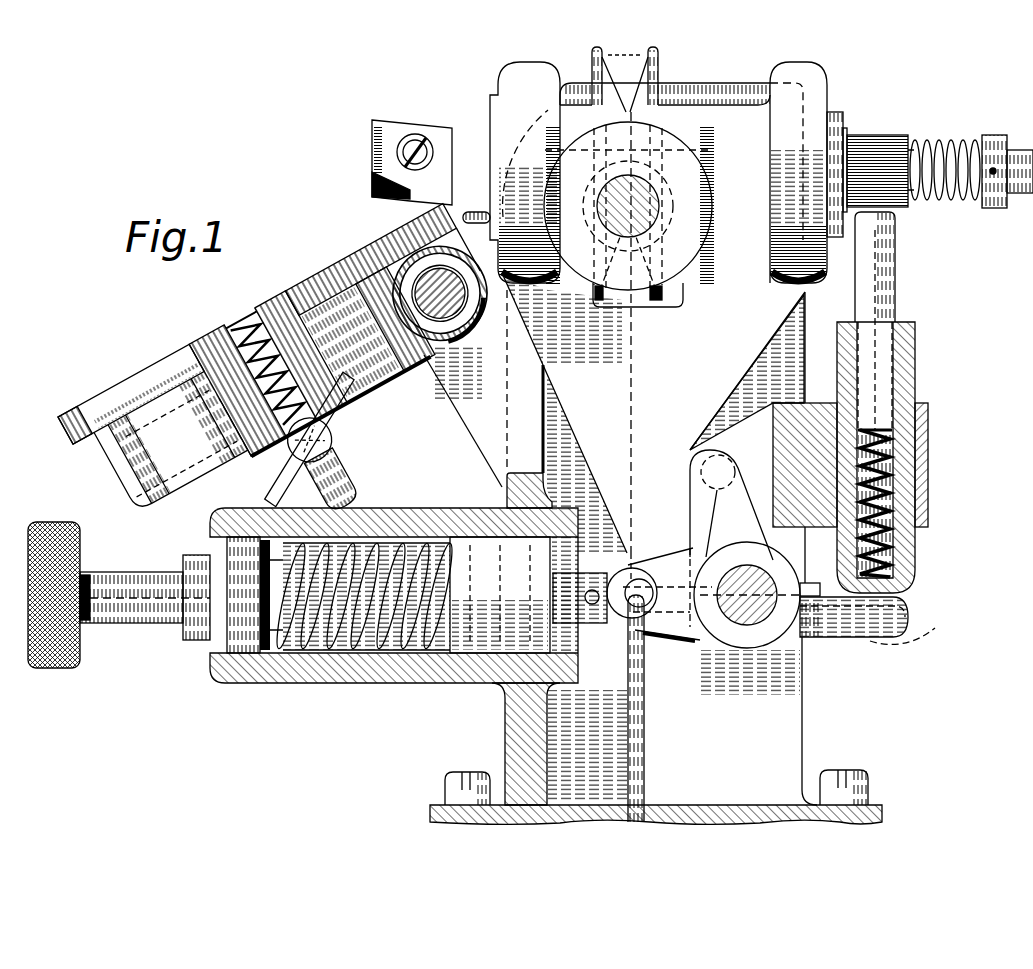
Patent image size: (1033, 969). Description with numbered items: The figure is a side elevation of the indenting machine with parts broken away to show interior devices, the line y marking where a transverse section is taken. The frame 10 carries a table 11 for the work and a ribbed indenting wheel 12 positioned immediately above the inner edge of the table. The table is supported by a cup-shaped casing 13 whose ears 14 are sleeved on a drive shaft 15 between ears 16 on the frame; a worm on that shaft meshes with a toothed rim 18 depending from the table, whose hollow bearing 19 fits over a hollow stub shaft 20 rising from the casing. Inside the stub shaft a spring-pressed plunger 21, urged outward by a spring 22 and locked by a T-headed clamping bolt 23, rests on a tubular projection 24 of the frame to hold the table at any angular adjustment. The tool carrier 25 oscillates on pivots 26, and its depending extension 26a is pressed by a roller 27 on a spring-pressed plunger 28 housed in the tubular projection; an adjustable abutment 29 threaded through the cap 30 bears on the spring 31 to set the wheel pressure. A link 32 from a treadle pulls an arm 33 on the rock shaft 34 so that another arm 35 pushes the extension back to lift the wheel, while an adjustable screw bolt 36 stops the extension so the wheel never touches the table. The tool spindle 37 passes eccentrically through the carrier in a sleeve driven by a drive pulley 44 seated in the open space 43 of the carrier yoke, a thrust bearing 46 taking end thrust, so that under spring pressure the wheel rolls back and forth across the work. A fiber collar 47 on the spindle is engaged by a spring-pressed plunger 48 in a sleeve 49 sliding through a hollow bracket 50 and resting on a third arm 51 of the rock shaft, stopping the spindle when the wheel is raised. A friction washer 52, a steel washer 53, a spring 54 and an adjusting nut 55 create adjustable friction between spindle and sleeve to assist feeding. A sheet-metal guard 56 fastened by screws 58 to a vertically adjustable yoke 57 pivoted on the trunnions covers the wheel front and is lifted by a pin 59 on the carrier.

The frame 10 is at (497, 742).
The table 11 is at (147, 375).
The indenting wheel 12 is at (378, 192).
The cup-shaped casing 13 is at (124, 488).
The ears 14 is at (462, 372).
The drive shaft 15 is at (470, 333).
The ears on the frame 16 is at (460, 413).
The toothed rim or disk 18 is at (320, 355).
The hollow bearing 19 is at (220, 406).
The stub shaft 20 is at (207, 334).
The spring-pressed plunger 21 is at (360, 479).
The spring 22 is at (243, 328).
The T-headed clamping bolt 23 is at (357, 434).
The tubular projection 24 is at (396, 516).
The tool carrier 25 is at (502, 76).
The pivots 26 is at (600, 196).
The depending extension 26a is at (647, 332).
The roller 27 is at (596, 625).
The spring-pressed plunger 28 is at (483, 652).
The adjustable abutment 29 is at (277, 646).
The cap 30 is at (212, 652).
The spring 31 is at (350, 652).
The link 32 is at (644, 740).
The arm 33 is at (680, 642).
The rock shaft 34 is at (738, 622).
The arm 35 is at (731, 505).
The adjustable screw bolt 36 is at (812, 582).
The tool spindle 37 is at (1020, 185).
The open space 43 is at (672, 305).
The drive pulley 44 is at (612, 90).
The thrust bearing 46 is at (672, 100).
The fiber collar 47 is at (884, 136).
The spring-pressed plunger 48 is at (895, 288).
The sleeve 49 is at (900, 378).
The hollow bracket 50 is at (929, 462).
The third arm 51 is at (908, 628).
The friction washer 52 is at (835, 112).
The steel washer 53 is at (846, 128).
The spring 54 is at (948, 142).
The adjusting nut 55 is at (1000, 136).
The guard 56 is at (372, 164).
The vertically adjustable yoke 57 is at (456, 135).
The screws 58 is at (413, 140).
The pin 59 is at (466, 218).
The section line y is at (655, 812).